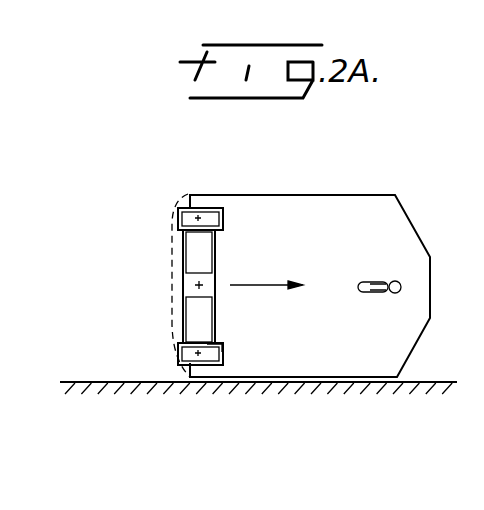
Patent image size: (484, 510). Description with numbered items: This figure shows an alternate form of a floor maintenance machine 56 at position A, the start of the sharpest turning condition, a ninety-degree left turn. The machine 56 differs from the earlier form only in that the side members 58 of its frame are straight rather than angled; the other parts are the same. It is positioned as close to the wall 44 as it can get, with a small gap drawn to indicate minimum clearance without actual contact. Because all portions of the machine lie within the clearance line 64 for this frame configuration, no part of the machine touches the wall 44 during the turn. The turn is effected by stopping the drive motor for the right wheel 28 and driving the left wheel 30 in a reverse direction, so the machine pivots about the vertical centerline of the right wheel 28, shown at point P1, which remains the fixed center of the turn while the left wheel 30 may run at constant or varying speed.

The right wheel 28 is at (188, 347).
The left wheel 30 is at (178, 221).
The wall 44 is at (113, 382).
The floor maintenance machine 56 is at (415, 222).
The side members 58 is at (325, 194).
The clearance line 64 is at (173, 276).
The pivot point P1 is at (207, 344).